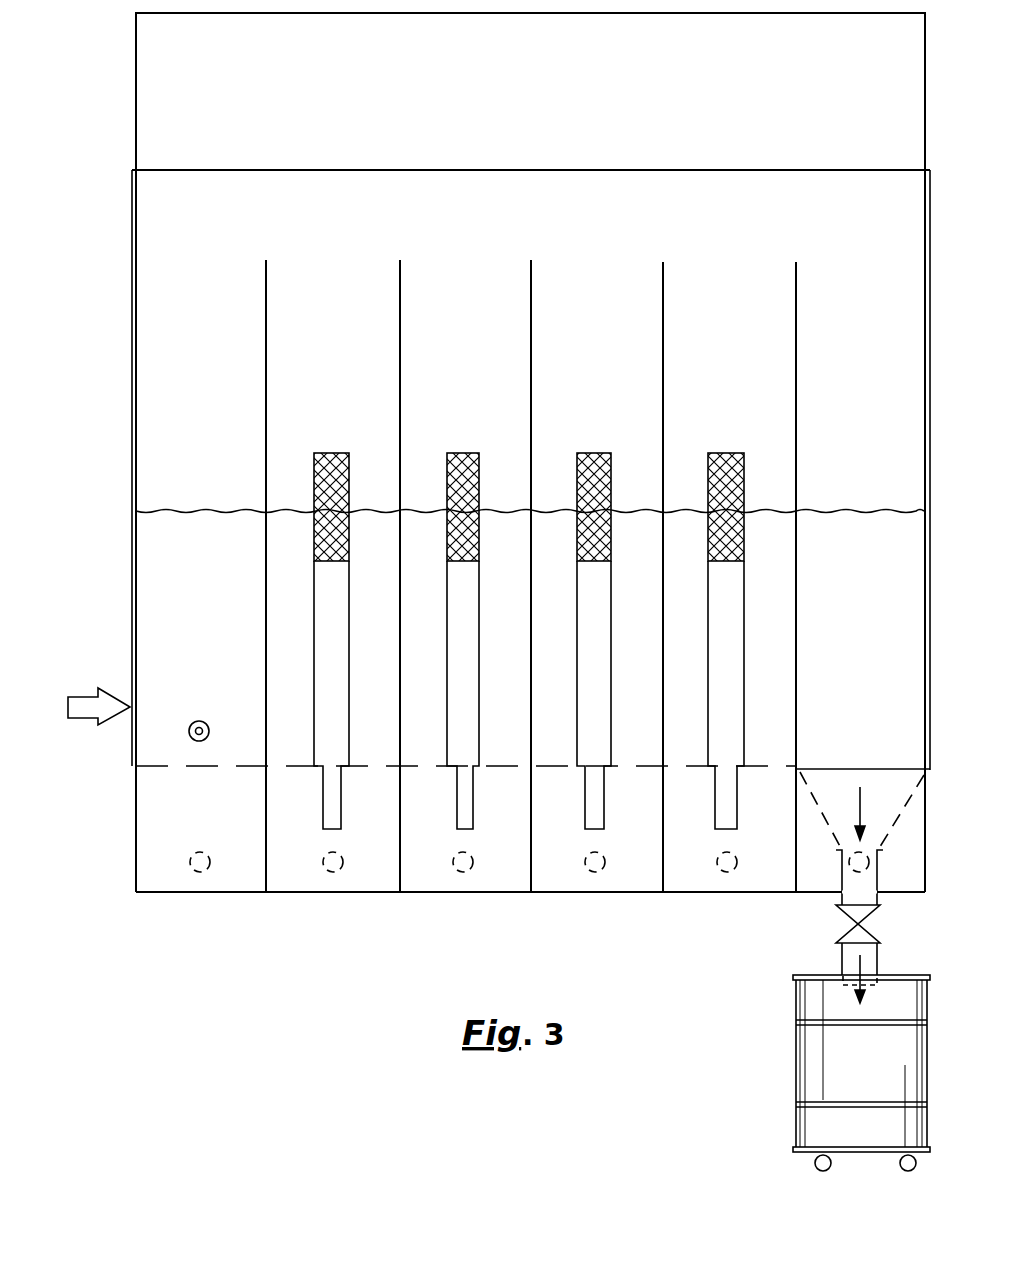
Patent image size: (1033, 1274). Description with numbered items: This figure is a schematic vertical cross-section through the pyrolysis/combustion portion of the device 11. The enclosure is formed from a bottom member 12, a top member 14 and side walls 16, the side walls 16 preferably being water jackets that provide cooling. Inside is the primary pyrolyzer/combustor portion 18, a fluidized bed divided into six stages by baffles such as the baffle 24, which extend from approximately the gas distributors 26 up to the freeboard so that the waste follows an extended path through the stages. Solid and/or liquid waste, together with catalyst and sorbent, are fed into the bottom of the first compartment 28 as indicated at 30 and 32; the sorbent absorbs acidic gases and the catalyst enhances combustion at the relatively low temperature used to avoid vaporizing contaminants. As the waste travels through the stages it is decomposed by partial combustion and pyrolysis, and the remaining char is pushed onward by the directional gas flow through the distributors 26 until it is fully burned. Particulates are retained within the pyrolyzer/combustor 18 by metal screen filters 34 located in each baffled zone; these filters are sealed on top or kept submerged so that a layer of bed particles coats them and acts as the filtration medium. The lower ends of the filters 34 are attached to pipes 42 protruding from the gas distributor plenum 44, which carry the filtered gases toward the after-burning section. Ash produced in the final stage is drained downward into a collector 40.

The device 11 is at (122, 344).
The bottom member 12 is at (633, 893).
The top member 14 is at (258, 170).
The side walls 16 is at (131, 478).
The primary pyrolyzer/combustor portion 18 is at (131, 538).
The baffle 24 is at (267, 700).
The gas distributors 26 is at (208, 858).
The first compartment 28 is at (160, 606).
The waste feed 30 is at (90, 693).
The catalyst and sorbent feed 32 is at (200, 718).
The metal screen filters 34 is at (328, 453).
The collector 40 is at (793, 981).
The pipes 42 is at (350, 690).
The gas distributor plenum 44 is at (238, 877).